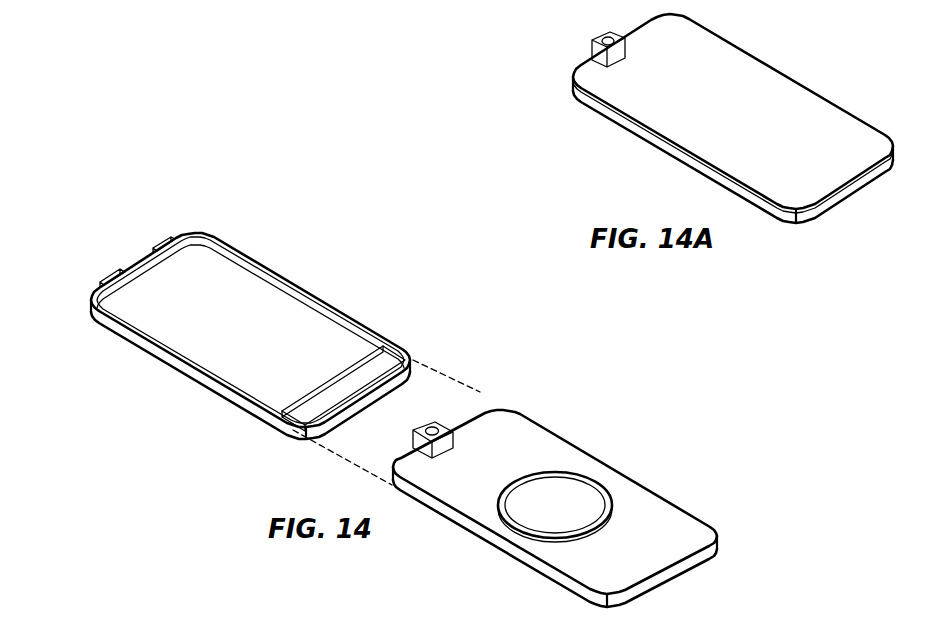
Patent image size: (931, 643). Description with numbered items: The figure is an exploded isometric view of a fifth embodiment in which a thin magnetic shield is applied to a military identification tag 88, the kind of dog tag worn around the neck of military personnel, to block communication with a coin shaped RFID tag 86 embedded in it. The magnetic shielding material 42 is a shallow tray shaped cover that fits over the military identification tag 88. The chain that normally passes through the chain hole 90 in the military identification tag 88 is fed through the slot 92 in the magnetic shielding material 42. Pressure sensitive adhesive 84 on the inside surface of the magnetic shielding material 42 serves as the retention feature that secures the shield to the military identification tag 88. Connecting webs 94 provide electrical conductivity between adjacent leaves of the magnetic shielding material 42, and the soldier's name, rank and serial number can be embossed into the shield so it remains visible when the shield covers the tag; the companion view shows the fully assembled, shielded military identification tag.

The magnetic shielding material 42 is at (310, 292).
The pressure sensitive adhesive 84 is at (287, 405).
The RFID tag 86 is at (577, 473).
The military identification tag 88 is at (643, 487).
The chain hole 90 is at (436, 426).
The slot 92 is at (142, 258).
The connecting webs 94 is at (155, 238).